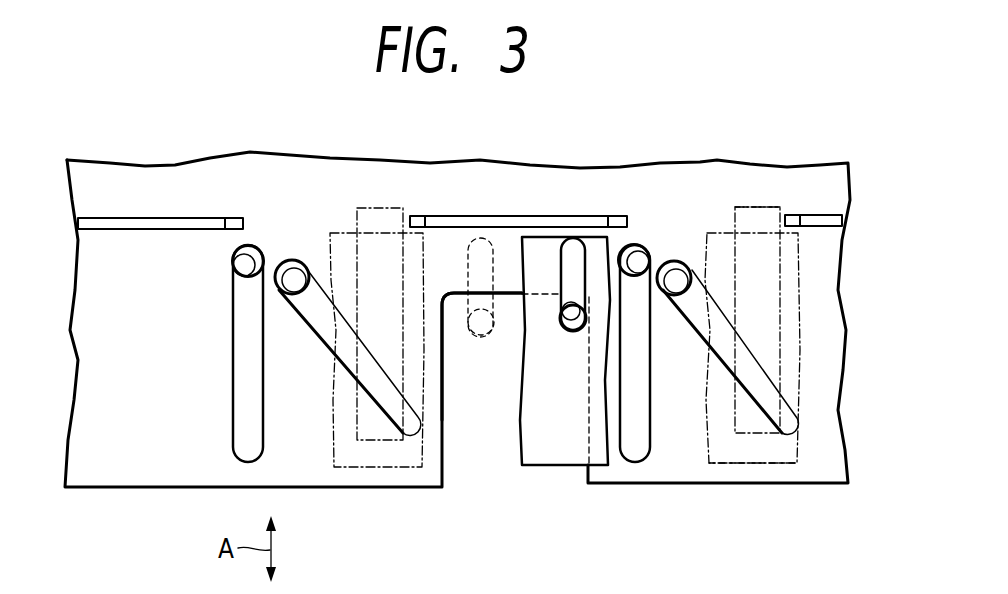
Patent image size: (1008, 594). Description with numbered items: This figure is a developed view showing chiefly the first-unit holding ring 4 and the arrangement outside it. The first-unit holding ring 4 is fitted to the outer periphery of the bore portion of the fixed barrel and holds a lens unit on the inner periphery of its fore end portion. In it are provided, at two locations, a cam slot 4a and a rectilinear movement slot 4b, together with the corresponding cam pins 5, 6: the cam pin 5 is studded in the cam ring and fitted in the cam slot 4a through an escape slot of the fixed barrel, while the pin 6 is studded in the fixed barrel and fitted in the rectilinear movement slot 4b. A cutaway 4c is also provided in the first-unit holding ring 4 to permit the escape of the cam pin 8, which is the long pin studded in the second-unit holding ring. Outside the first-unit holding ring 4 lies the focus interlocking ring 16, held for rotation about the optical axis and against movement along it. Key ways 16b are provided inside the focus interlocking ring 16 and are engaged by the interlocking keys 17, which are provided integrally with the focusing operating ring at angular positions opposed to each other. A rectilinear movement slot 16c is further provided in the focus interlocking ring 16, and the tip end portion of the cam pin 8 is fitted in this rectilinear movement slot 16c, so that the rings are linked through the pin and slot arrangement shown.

The first-unit holding ring 4 is at (825, 178).
The cam slot 4a is at (338, 370).
The rectilinear movement slot 4b is at (242, 360).
The cutaway 4c is at (442, 395).
The cam pin 5 is at (300, 268).
The pin 6 is at (245, 264).
The cam pin 8 is at (577, 305).
The focus interlocking ring 16 is at (535, 247).
The key ways 16b is at (725, 463).
The rectilinear movement slot 16c is at (572, 300).
The interlocking keys 17 is at (763, 207).